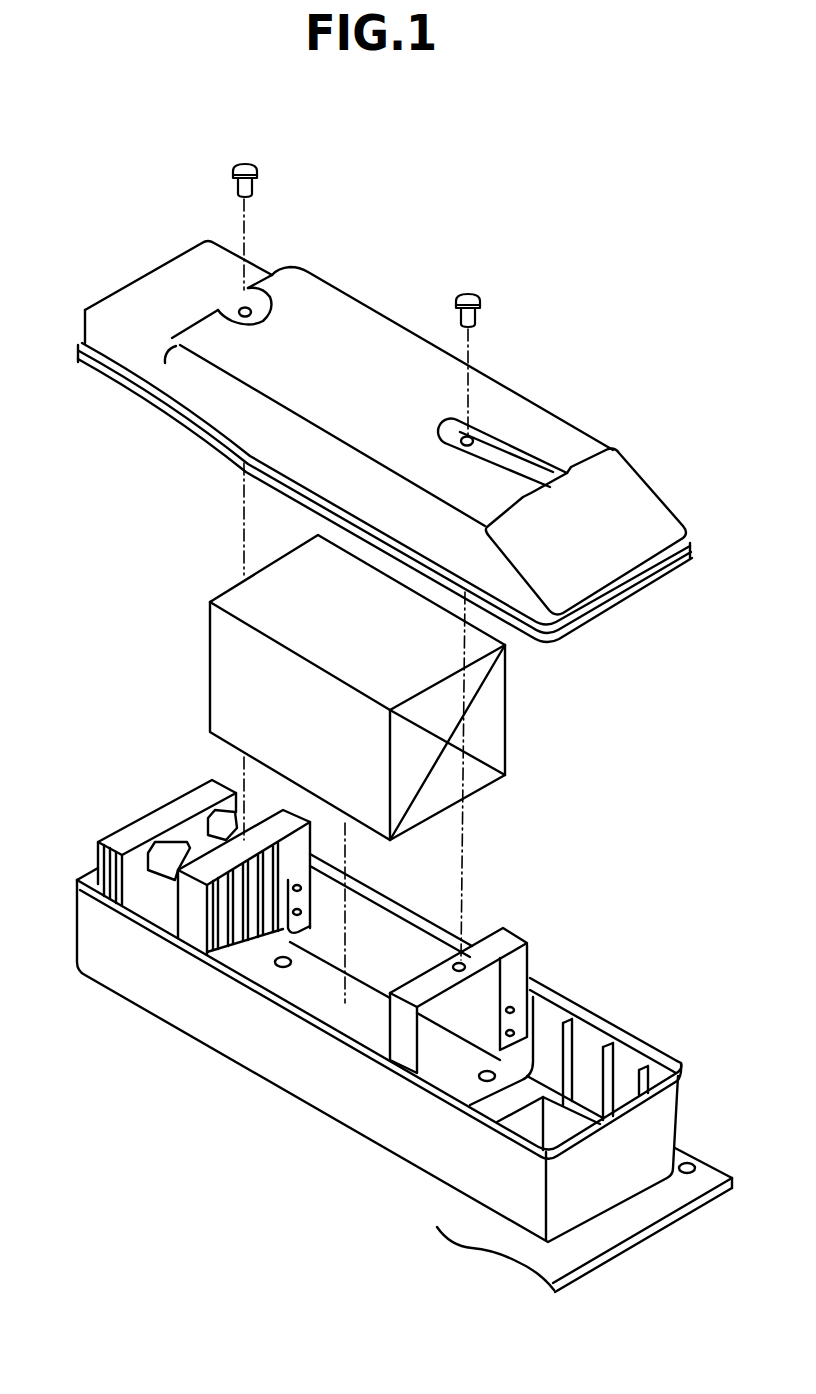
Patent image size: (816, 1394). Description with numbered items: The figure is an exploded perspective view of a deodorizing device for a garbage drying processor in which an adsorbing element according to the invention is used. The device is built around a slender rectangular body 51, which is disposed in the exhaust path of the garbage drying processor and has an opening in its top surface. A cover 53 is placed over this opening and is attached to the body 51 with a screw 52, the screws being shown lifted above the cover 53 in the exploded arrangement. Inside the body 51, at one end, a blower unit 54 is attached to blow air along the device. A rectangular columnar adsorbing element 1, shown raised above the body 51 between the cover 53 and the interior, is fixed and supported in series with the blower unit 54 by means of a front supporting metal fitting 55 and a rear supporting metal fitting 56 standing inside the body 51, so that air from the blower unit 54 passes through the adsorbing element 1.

The adsorbing element 1 is at (200, 573).
The body 51 is at (283, 1072).
The screw 52 is at (243, 163).
The cover 53 is at (353, 330).
The blower unit 54 is at (167, 817).
The front supporting metal fitting 55 is at (190, 920).
The rear supporting metal fitting 56 is at (503, 944).